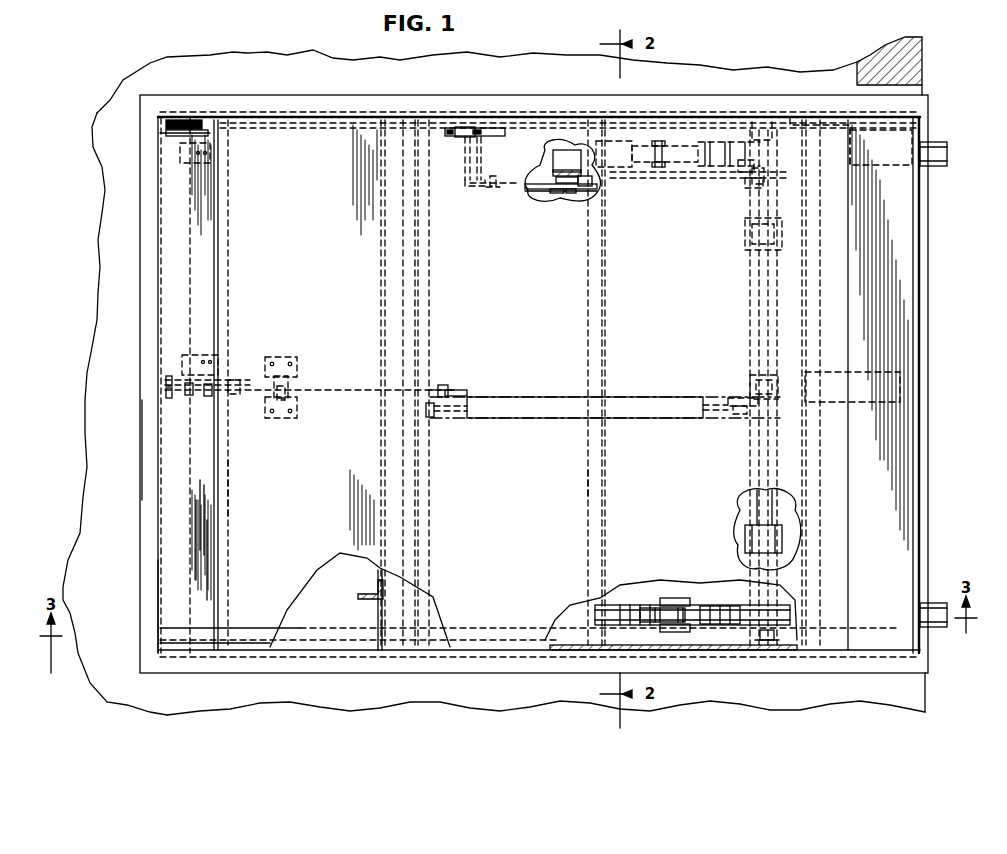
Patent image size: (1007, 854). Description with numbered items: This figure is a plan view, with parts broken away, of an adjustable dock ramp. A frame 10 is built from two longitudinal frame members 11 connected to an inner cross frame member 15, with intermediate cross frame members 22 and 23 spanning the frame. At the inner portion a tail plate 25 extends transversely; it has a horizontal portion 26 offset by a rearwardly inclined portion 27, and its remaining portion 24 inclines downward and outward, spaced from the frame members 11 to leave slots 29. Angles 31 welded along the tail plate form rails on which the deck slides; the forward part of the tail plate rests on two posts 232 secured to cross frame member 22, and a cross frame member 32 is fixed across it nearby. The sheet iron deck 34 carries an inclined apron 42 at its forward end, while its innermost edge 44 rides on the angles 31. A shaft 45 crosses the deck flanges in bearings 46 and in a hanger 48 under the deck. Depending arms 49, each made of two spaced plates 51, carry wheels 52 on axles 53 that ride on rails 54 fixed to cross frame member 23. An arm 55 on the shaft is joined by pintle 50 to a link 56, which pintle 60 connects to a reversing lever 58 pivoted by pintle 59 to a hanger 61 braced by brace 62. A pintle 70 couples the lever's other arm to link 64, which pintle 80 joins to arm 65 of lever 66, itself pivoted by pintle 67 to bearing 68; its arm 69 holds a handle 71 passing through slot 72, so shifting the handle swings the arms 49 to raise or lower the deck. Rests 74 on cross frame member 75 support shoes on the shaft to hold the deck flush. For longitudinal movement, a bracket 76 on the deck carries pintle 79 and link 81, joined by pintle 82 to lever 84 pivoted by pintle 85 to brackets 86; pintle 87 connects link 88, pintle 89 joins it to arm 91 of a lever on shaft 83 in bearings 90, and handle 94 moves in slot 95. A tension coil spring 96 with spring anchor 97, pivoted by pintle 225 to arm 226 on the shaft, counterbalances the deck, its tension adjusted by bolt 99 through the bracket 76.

The frame 10 is at (930, 95).
The longitudinal frame members 11 is at (806, 114).
The inner cross frame member 15 is at (146, 448).
The intermediate cross frame member 22 is at (430, 309).
The intermediate cross frame member 23 is at (607, 328).
The remaining portion of tail plate 24 is at (265, 490).
The tail plate 25 is at (205, 572).
The horizontal portion 26 is at (198, 530).
The rearwardly inclined portion 27 is at (165, 600).
The slots 29 is at (218, 128).
The angles 31 is at (195, 633).
The cross frame member 32 is at (398, 610).
The deck 34 is at (672, 482).
The apron 42 is at (870, 500).
The innermost edge of deck 44 is at (215, 498).
The shaft 45 is at (760, 455).
The bearings 46 is at (762, 126).
The hanger 48 is at (752, 376).
The depending arms 49 is at (700, 144).
The pintle 50 is at (754, 184).
The spaced plates 51 is at (715, 604).
The wheels 52 is at (650, 606).
The axles 53 is at (669, 598).
The rails 54 is at (934, 160).
The arm 55 is at (740, 172).
The link 56 is at (688, 178).
The reversing lever 58 is at (570, 193).
The pintle 59 is at (560, 192).
The pintle 60 is at (582, 193).
The hanger 61 is at (569, 150).
The brace 62 is at (560, 152).
The link 64 is at (540, 183).
The arm 65 is at (480, 186).
The lever 66 is at (493, 176).
The pintle 67 is at (468, 185).
The bearing 68 is at (466, 153).
The arm 69 is at (467, 127).
The pintle 70 is at (553, 188).
The handle 71 is at (478, 128).
The slot 72 is at (450, 128).
The rests 74 is at (782, 236).
The cross frame member 75 is at (770, 506).
The bracket 76 is at (458, 392).
The pintle 79 is at (445, 385).
The pintle 80 is at (492, 190).
The link 81 is at (336, 388).
The pintle 82 is at (207, 397).
The shaft 83 is at (186, 256).
The lever 84 is at (232, 382).
The pintle 85 is at (283, 418).
The brackets 86 is at (290, 357).
The pintle 87 is at (264, 378).
The link 88 is at (188, 395).
The pintle 89 is at (170, 392).
The bearings 90 is at (176, 150).
The arm 91 is at (175, 368).
The handle 94 is at (182, 125).
The slot 95 is at (206, 130).
The tension coil spring 96 is at (542, 396).
The spring anchor 97 is at (730, 400).
The bolt 99 is at (450, 418).
The pintle 225 is at (738, 396).
The arm 226 is at (750, 418).
The posts 232 is at (364, 598).